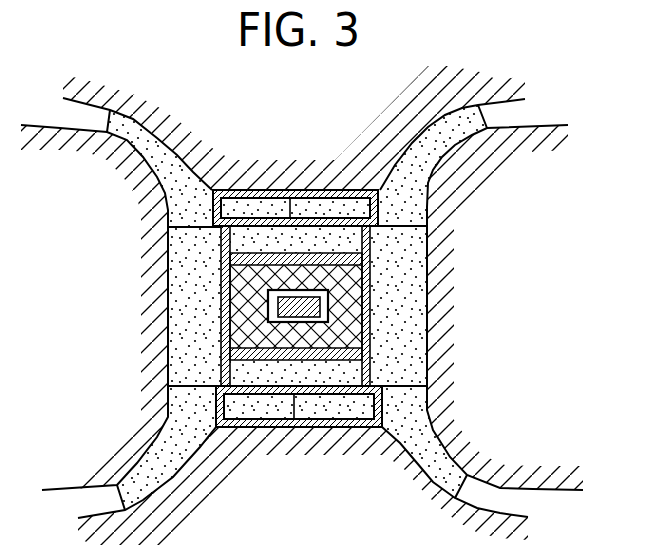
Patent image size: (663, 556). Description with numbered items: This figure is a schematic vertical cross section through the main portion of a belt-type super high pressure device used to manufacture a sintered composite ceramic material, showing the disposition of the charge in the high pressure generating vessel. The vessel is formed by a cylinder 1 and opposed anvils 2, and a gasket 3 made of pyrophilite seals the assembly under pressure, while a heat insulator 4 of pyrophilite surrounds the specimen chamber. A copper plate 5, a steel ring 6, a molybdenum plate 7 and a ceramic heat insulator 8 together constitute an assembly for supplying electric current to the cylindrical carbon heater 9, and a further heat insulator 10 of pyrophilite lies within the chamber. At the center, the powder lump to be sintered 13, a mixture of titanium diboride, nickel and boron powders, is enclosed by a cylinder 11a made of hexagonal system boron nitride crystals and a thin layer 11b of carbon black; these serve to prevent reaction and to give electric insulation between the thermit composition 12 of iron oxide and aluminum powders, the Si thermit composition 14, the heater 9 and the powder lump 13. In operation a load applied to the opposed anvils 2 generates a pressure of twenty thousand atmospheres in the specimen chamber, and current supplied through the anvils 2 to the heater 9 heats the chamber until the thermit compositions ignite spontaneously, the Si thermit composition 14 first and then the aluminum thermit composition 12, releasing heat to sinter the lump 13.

The cylinder 1 is at (473, 303).
The anvil 2 is at (297, 279).
The gasket 3 is at (428, 160).
The heat insulator 4 is at (183, 253).
The copper plate 5 is at (248, 190).
The steel ring 6 is at (212, 205).
The molybdenum plate 7 is at (284, 190).
The ceramic heat insulator 8 is at (337, 190).
The heater 9 is at (372, 239).
The heat insulator 10 is at (356, 362).
The cylinder made of hexagonal system boron nitride crystals 11a is at (268, 292).
The thin layer made of carbon black 11b is at (330, 321).
The thermit composition 12 is at (232, 337).
The powder lump to be sintered 13 is at (253, 287).
The Si thermit composition 14 is at (343, 265).